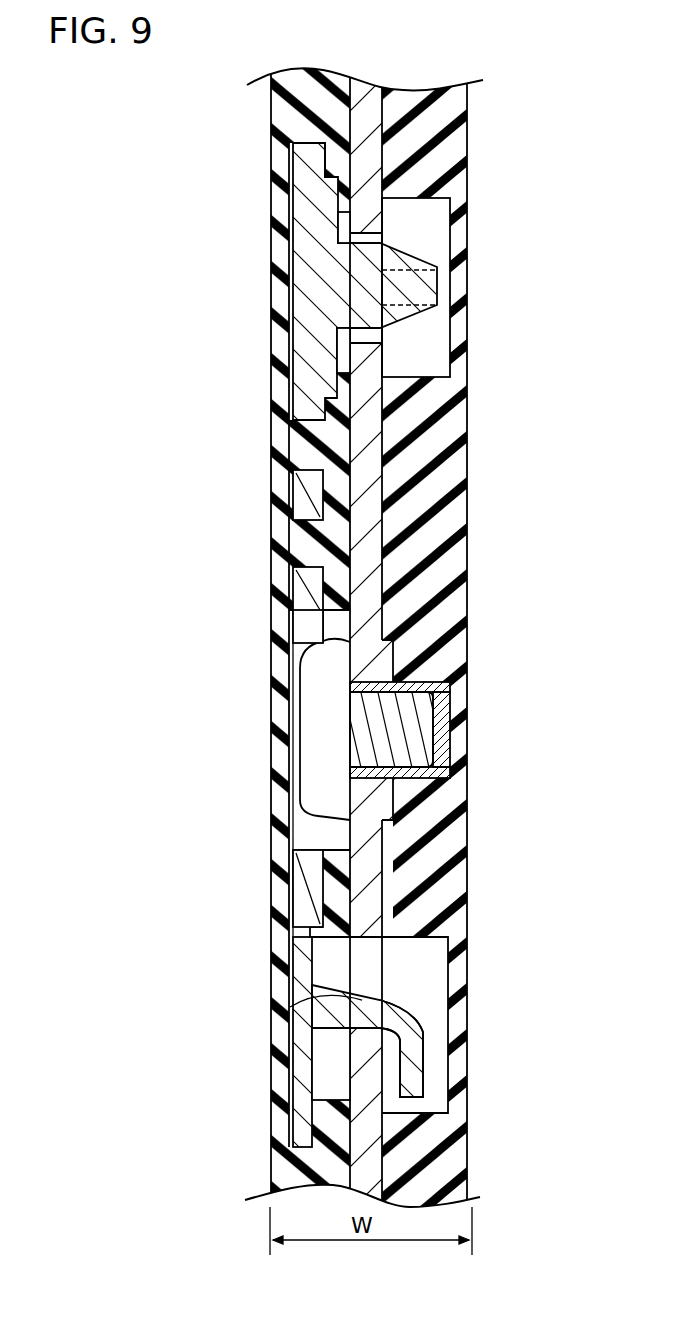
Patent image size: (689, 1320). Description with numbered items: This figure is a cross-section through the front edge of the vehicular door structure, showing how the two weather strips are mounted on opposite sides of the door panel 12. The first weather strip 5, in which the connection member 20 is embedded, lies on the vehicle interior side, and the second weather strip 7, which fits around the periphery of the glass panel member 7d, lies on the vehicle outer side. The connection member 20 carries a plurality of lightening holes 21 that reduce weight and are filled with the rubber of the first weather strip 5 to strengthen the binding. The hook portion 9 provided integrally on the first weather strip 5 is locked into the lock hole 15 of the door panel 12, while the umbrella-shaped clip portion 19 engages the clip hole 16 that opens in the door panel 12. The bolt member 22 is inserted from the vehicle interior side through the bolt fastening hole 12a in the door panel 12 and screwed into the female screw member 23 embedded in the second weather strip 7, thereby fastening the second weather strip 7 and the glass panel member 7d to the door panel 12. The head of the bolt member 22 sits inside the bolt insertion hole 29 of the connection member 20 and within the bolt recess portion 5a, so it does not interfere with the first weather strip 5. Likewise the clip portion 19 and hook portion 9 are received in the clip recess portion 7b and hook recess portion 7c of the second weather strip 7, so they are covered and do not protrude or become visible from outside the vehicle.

The first weather strip 5 is at (300, 83).
The bolt recess portion 5a is at (291, 762).
The second weather strip 7 is at (443, 100).
The clip recess portion 7b is at (440, 337).
The hook recess portion 7c is at (438, 951).
The glass panel member 7d is at (437, 670).
The hook portion 9 is at (413, 1037).
The door panel 12 is at (363, 90).
The bolt fastening hole 12a is at (347, 705).
The lock hole 15 is at (300, 1000).
The clip hole 16 is at (360, 247).
The clip portion 19 is at (430, 283).
The connection member 20 is at (305, 165).
The lightening holes 21 is at (308, 563).
The bolt member 22 is at (420, 747).
The female screw member 23 is at (430, 707).
The bolt insertion hole 29 is at (308, 622).